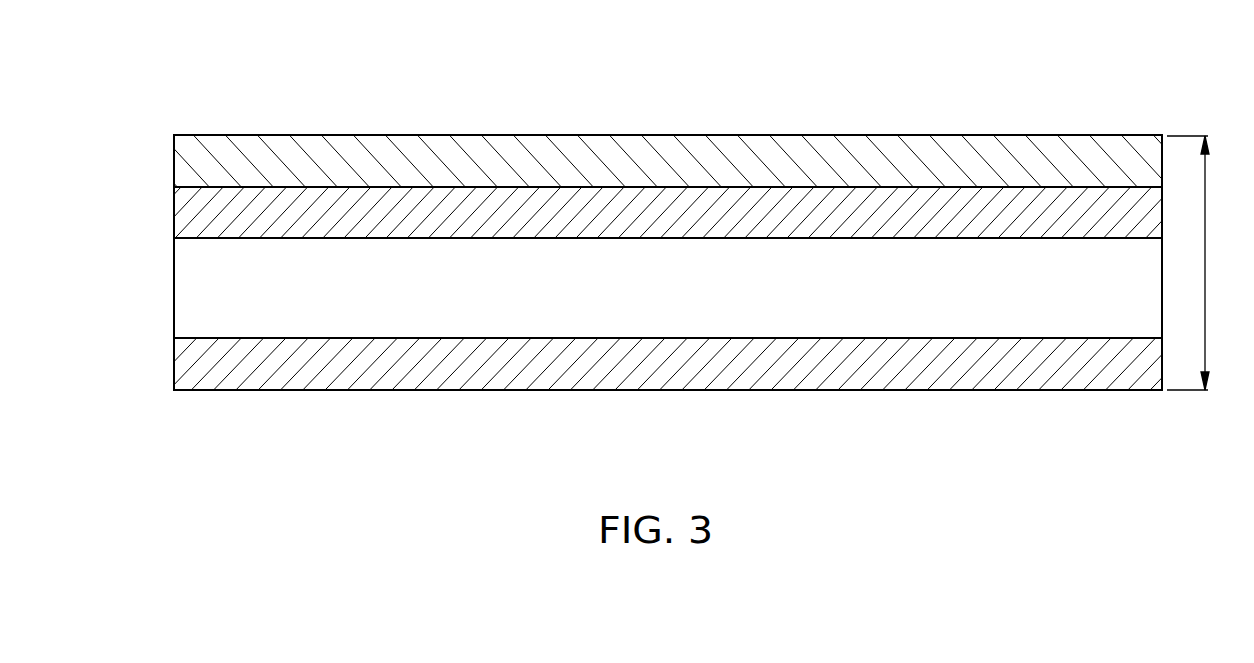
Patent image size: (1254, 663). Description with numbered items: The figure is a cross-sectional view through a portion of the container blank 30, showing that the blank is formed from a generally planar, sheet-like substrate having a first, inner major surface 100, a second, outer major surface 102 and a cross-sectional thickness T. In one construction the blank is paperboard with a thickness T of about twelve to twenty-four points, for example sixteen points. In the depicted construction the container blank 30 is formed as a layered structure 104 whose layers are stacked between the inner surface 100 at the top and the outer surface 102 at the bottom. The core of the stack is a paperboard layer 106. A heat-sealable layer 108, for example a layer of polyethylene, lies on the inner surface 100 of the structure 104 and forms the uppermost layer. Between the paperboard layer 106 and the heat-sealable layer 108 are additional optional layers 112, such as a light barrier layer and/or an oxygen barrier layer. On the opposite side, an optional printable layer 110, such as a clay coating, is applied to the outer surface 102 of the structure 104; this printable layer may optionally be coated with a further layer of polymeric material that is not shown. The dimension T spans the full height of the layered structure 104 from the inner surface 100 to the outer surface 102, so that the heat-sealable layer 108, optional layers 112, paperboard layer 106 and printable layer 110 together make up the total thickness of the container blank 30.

The container blank 30 is at (958, 79).
The first, inner major surface 100 is at (642, 135).
The second, outer major surface 102 is at (648, 390).
The layered structure 104 is at (174, 135).
The paperboard layer 106 is at (175, 288).
The heat-sealable layer 108 is at (175, 165).
The printable layer 110 is at (175, 366).
The additional optional layers 112 is at (175, 210).
The cross-sectional thickness T is at (1210, 268).